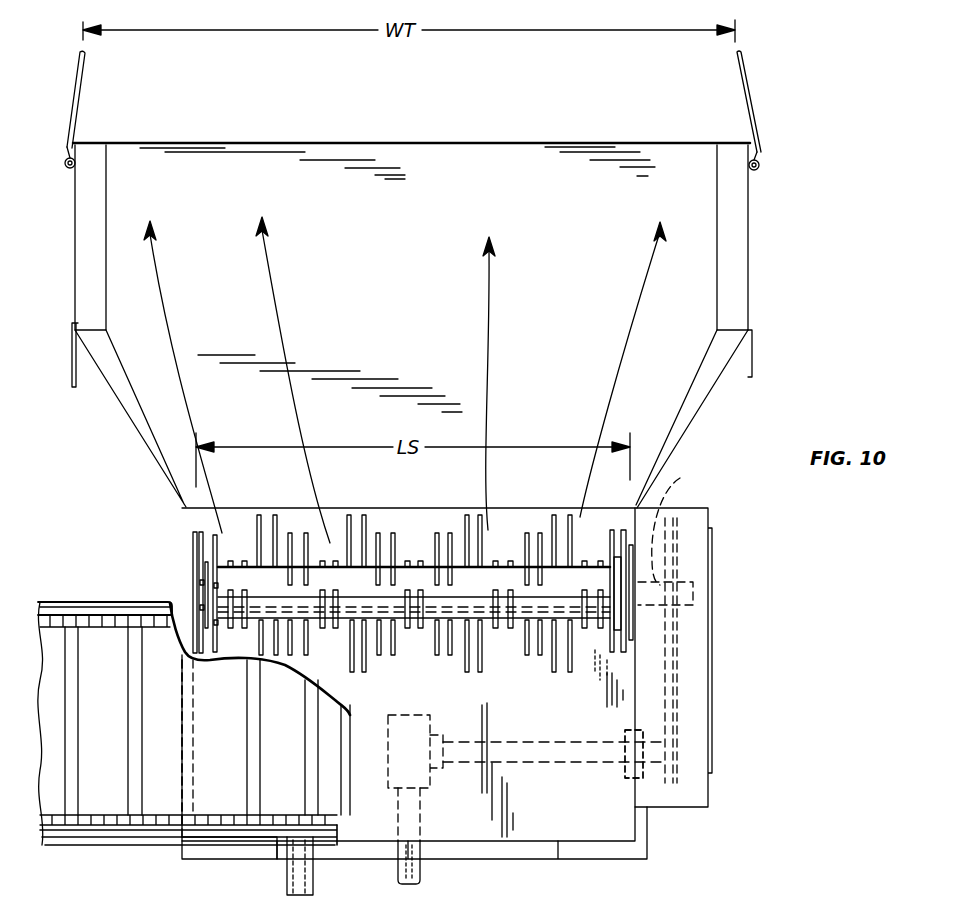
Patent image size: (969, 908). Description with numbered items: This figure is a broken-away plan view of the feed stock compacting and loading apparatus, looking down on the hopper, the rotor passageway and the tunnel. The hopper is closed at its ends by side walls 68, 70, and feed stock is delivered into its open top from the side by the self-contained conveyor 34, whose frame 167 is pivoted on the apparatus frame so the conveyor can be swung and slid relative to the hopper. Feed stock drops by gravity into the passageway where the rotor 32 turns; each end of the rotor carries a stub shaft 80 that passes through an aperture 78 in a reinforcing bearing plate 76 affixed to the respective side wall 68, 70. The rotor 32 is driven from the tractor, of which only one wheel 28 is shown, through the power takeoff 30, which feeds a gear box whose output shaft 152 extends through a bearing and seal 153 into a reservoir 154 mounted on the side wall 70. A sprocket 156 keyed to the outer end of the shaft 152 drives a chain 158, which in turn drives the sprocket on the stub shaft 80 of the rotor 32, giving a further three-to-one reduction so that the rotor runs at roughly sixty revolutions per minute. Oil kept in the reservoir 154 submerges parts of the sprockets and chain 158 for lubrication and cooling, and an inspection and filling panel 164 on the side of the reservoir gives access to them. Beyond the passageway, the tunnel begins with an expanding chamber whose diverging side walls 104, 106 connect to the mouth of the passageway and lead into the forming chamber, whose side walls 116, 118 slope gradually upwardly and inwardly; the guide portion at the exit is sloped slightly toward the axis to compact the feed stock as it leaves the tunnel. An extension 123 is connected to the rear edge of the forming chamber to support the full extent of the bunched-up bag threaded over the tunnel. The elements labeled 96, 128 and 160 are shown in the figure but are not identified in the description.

The wheel 28 is at (226, 872).
The power takeoff 30 is at (420, 872).
The rotor 32 is at (411, 647).
The conveyor 34 is at (56, 585).
The side wall 68 is at (192, 587).
The side wall 70 is at (648, 826).
The reinforcing bearing plate 76 is at (195, 545).
The aperture 78 is at (193, 568).
The stub shaft 80 is at (664, 496).
The tines 96 is at (207, 530).
The side wall 104 is at (703, 403).
The side wall 106 is at (130, 418).
The side wall 116 is at (748, 248).
The side wall 118 is at (75, 258).
The extension 123 is at (752, 358).
The outlet pipe 128 is at (312, 872).
The output shaft 152 is at (516, 742).
The bearing and seal 153 is at (620, 775).
The reservoir 154 is at (702, 692).
The sprocket 156 is at (680, 777).
The chain 158 is at (680, 660).
The drive pulley 160 is at (680, 547).
The inspection and filling panel 164 is at (712, 572).
The frame 167 is at (107, 836).